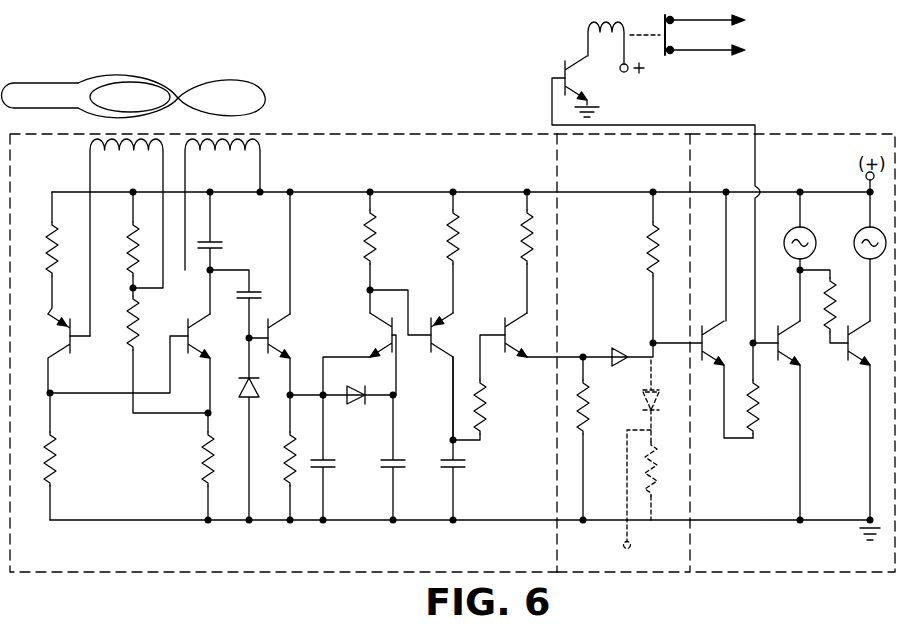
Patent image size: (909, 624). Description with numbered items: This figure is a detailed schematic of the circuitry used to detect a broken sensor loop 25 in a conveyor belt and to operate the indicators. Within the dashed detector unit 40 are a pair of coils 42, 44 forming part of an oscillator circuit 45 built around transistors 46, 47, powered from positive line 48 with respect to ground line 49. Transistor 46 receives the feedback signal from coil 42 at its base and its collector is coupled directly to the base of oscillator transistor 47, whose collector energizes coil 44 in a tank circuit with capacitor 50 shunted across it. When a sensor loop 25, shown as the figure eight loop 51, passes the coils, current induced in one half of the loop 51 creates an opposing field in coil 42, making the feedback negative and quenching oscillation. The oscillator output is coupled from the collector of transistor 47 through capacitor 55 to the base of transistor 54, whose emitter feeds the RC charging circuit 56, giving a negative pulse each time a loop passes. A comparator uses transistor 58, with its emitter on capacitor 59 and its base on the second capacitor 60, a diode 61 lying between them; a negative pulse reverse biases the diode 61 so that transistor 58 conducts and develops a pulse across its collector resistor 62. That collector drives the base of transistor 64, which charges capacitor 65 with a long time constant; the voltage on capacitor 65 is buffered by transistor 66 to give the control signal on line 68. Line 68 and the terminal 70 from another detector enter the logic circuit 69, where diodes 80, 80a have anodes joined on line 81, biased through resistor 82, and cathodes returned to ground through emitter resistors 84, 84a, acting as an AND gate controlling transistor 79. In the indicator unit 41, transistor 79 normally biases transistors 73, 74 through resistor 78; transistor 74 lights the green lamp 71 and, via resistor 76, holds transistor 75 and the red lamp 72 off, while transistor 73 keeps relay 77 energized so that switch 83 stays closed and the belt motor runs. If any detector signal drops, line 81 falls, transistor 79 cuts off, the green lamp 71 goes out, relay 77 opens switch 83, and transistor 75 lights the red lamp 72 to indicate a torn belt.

The sensor loop 25 is at (75, 83).
The figure eight loop 51 is at (218, 80).
The detector unit 40 is at (238, 572).
The indicator unit 41 is at (785, 572).
The coil 42 is at (90, 152).
The coil 44 is at (260, 150).
The oscillator circuit 45 is at (143, 492).
The transistor 46 is at (70, 340).
The oscillator transistor 47 is at (188, 332).
The line 48 is at (495, 192).
The ground line 49 is at (510, 520).
The capacitor 50 is at (214, 244).
The transistor 54 is at (272, 337).
The capacitor 55 is at (252, 292).
The RC charging circuit 56 is at (301, 498).
The transistor 58 is at (388, 337).
The capacitor 59 is at (340, 448).
The second capacitor 60 is at (410, 448).
The diode 61 is at (357, 404).
The collector resistor 62 is at (366, 243).
The transistor 64 is at (429, 346).
The capacitor 65 is at (465, 448).
The transistor 66 is at (503, 335).
The line 68 is at (533, 358).
The logic circuit 69 is at (643, 572).
The terminal 70 is at (622, 548).
The green lamp 71 is at (790, 234).
The red lamp 72 is at (859, 234).
The transistor 73 is at (565, 70).
The transistor 74 is at (777, 334).
The transistor 75 is at (845, 334).
The resistor 76 is at (820, 324).
The relay 77 is at (586, 33).
The resistor 78 is at (756, 422).
The transistor 79 is at (698, 338).
The diode 80 is at (621, 354).
The diode 80a is at (645, 396).
The line 81 is at (653, 308).
The base bias resistor 82 is at (650, 242).
The switch 83 is at (668, 54).
The emitter resistor 84 is at (586, 432).
The emitter resistor 84a is at (660, 492).